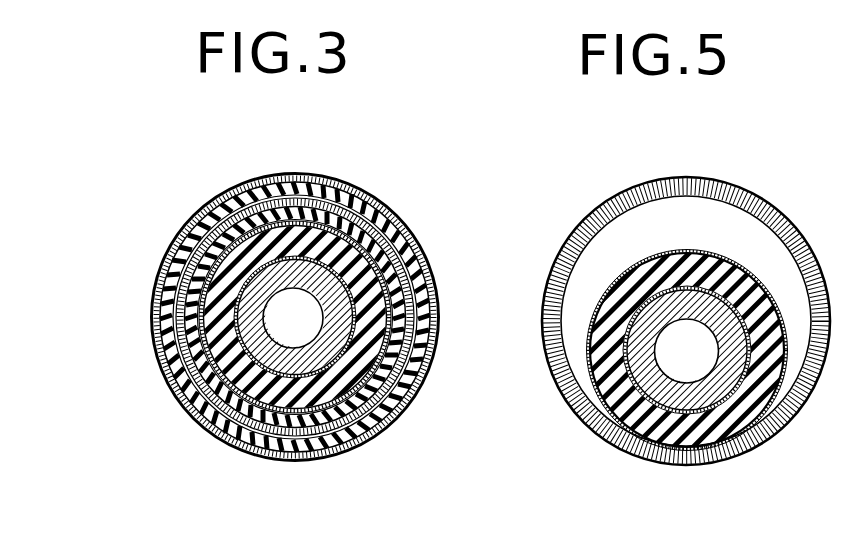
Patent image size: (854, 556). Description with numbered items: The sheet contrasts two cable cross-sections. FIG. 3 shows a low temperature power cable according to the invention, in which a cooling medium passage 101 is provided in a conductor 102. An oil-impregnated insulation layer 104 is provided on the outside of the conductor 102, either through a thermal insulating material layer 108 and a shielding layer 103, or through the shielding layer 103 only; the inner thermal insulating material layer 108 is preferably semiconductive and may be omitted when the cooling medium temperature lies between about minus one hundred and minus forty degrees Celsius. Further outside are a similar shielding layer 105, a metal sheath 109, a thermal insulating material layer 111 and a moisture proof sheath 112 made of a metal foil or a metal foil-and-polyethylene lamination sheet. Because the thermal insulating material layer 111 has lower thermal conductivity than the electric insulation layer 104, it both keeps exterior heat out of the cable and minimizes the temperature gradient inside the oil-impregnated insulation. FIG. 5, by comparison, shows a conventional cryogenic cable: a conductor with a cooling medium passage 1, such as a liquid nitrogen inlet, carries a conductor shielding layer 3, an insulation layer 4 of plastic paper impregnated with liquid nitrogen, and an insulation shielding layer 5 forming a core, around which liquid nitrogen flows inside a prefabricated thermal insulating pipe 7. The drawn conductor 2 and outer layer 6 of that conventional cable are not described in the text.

In FIG. 3, the cooling medium passage 101 is at (273, 312).
In FIG. 3, the conductor 102 is at (267, 277).
In FIG. 3, the shielding layer 103 is at (260, 228).
In FIG. 3, the oil-impregnated insulation layer 104 is at (275, 210).
In FIG. 3, the shielding layer 105 is at (303, 203).
In FIG. 3, the thermal insulating material layer 108 is at (400, 278).
In FIG. 3, the metal sheath 109 is at (370, 212).
In FIG. 3, the thermal insulating material layer 111 is at (400, 235).
In FIG. 3, the moisture proof sheath 112 is at (413, 247).
In FIG. 5, the cooling medium passage 1 is at (670, 365).
In FIG. 5, the conductor 2 is at (665, 395).
In FIG. 5, the conductor shielding layer 3 is at (668, 420).
In FIG. 5, the insulation layer 4 is at (680, 432).
In FIG. 5, the insulation shielding layer 5 is at (747, 427).
In FIG. 5, the thermal insulation 6 is at (660, 208).
In FIG. 5, the thermal insulating pipe 7 is at (710, 187).